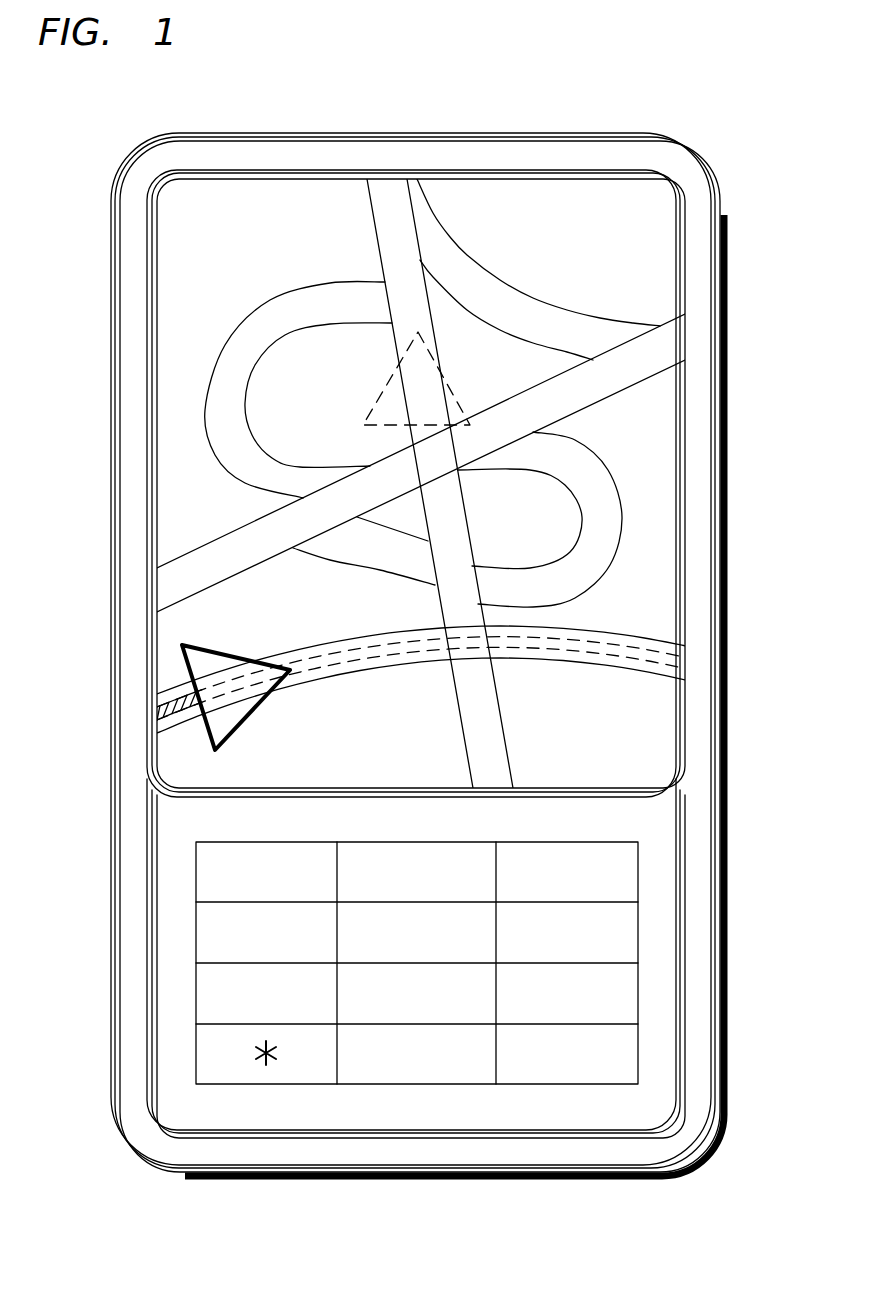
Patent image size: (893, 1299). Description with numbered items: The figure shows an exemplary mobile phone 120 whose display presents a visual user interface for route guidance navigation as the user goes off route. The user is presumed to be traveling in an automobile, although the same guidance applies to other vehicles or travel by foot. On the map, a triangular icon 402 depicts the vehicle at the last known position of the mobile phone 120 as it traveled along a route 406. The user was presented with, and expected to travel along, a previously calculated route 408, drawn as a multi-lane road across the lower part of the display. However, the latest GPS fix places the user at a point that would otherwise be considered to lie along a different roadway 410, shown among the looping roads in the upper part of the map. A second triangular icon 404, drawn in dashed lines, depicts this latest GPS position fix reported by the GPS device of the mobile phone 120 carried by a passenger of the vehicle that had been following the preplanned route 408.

The mobile phone 120 is at (705, 708).
The triangular icon 402 is at (187, 663).
The triangular icon 404 is at (448, 385).
The route 406 is at (170, 712).
The previously calculated route 408 is at (345, 662).
The different roadway 410 is at (468, 527).